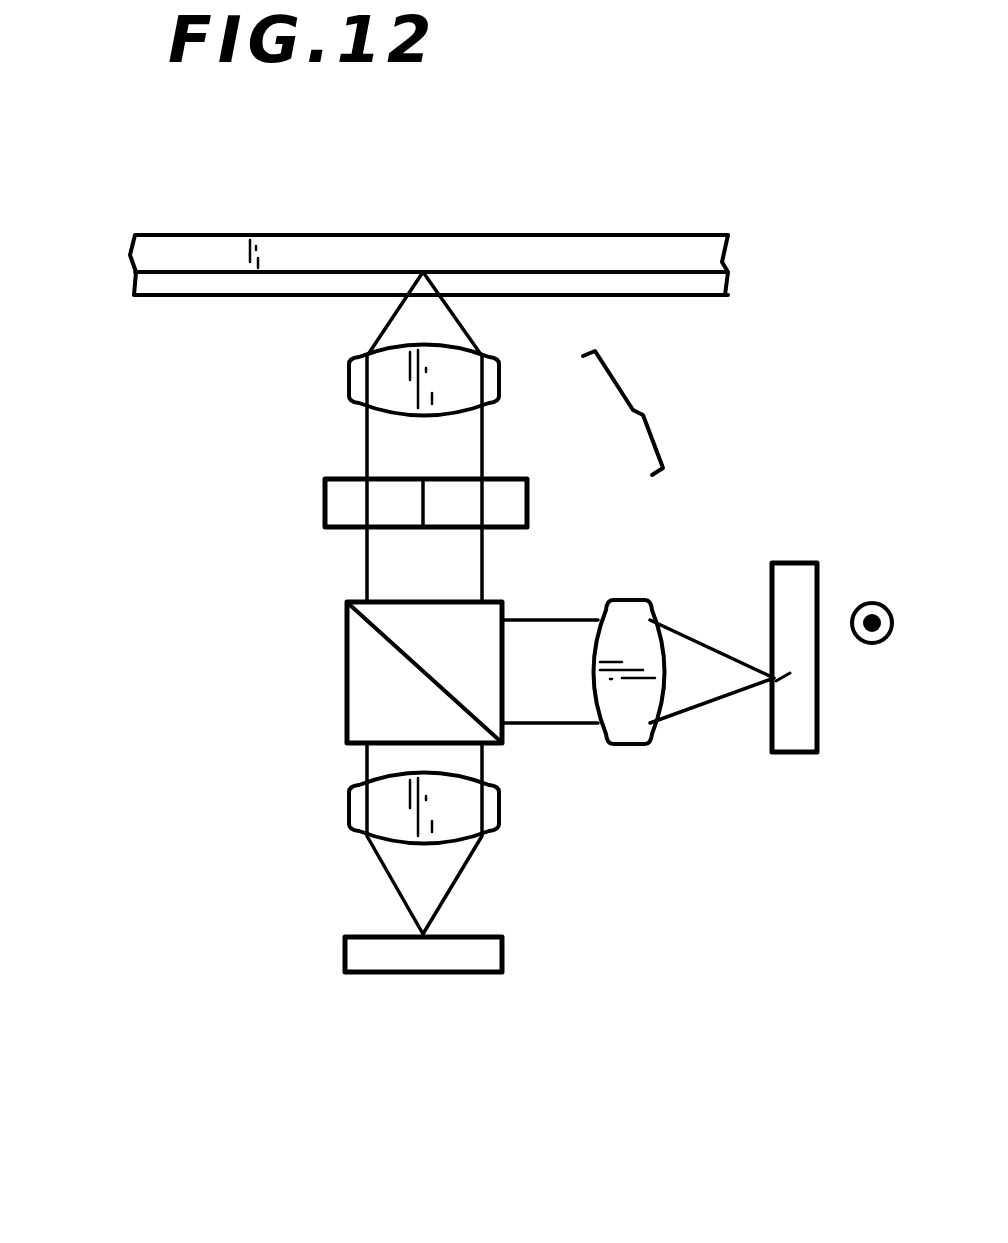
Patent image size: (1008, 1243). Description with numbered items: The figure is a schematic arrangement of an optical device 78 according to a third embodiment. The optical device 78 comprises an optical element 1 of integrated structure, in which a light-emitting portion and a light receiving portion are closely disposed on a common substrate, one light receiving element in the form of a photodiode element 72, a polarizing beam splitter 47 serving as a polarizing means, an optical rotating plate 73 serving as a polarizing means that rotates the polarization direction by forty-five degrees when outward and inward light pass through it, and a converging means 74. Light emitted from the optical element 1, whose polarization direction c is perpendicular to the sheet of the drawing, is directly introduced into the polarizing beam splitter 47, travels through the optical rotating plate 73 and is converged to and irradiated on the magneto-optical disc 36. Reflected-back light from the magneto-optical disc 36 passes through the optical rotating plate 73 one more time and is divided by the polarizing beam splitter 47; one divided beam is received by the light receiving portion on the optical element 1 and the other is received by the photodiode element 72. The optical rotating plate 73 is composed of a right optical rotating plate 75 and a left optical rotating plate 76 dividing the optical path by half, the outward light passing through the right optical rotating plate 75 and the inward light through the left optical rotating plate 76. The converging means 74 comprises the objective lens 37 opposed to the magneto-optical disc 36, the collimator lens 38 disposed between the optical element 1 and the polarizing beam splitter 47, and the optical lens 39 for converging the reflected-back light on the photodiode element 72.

The optical element 1 is at (793, 727).
The magneto-optical disc 36 is at (562, 280).
The objective lens 37 is at (462, 378).
The collimator lens 38 is at (635, 637).
The optical lens 39 is at (458, 807).
The polarizing beam splitter 47 is at (347, 672).
The photodiode element 72 is at (468, 950).
The optical rotating plate 73 is at (342, 463).
The converging means 74 is at (637, 413).
The right optical rotating plate 75 is at (453, 490).
The left optical rotating plate 76 is at (345, 498).
The optical device 78 is at (92, 683).
The polarization direction C is at (882, 598).